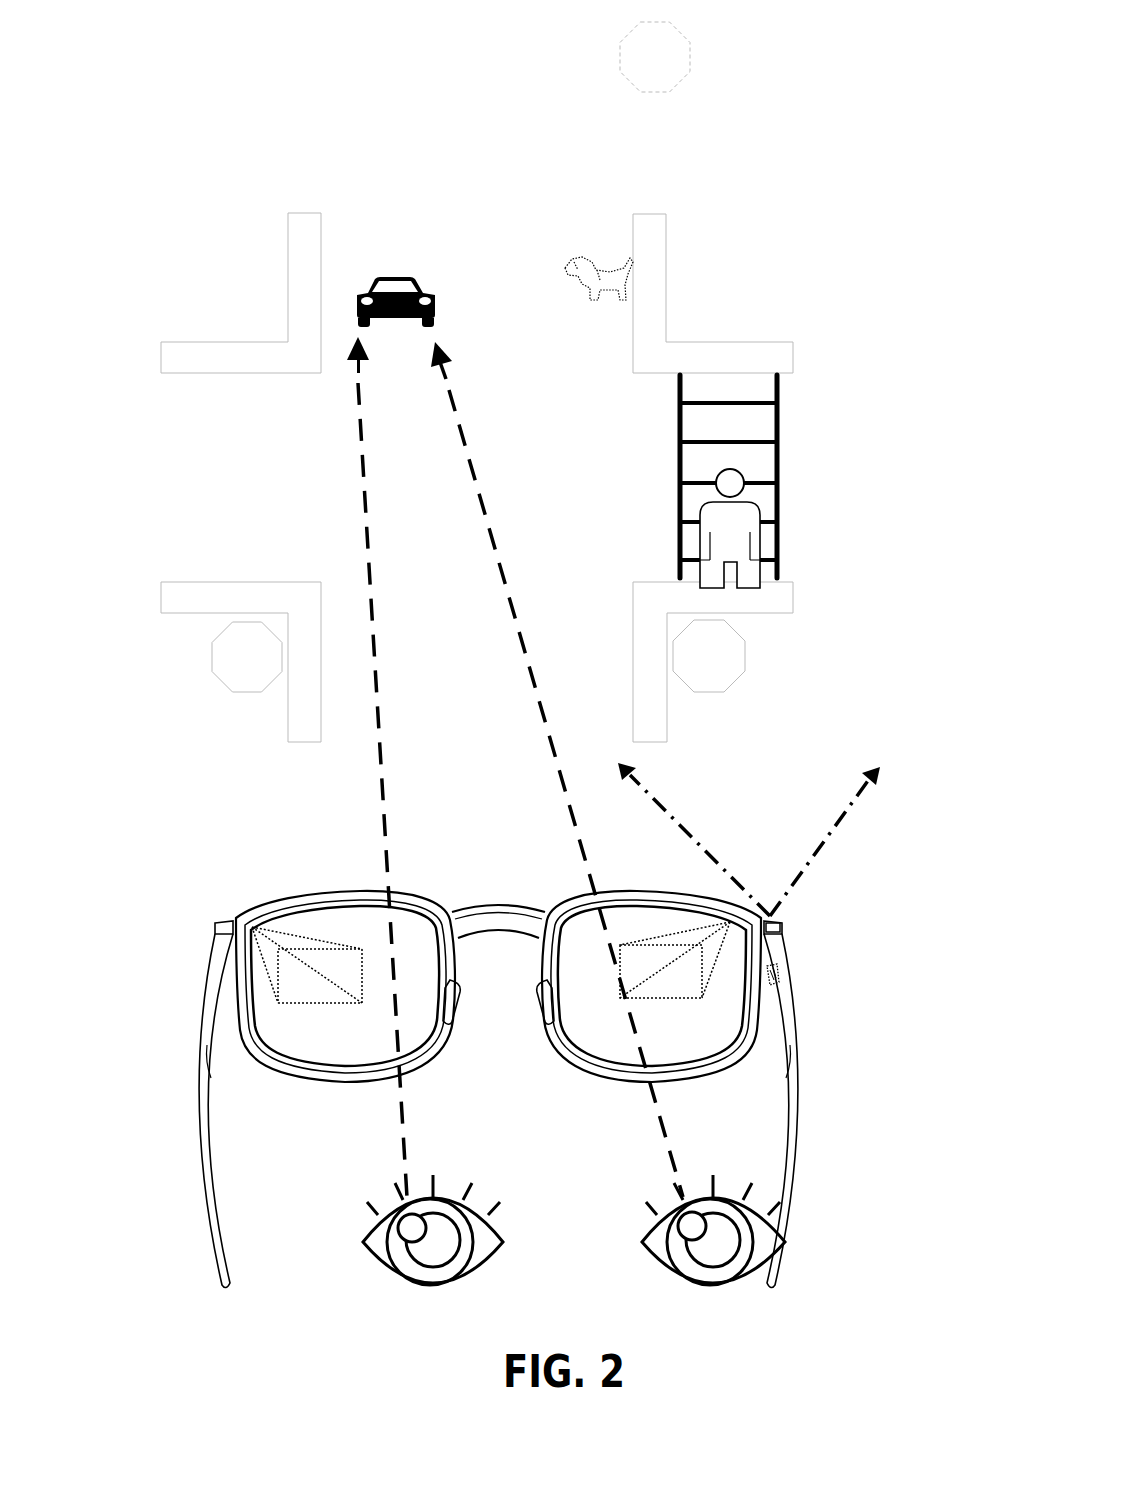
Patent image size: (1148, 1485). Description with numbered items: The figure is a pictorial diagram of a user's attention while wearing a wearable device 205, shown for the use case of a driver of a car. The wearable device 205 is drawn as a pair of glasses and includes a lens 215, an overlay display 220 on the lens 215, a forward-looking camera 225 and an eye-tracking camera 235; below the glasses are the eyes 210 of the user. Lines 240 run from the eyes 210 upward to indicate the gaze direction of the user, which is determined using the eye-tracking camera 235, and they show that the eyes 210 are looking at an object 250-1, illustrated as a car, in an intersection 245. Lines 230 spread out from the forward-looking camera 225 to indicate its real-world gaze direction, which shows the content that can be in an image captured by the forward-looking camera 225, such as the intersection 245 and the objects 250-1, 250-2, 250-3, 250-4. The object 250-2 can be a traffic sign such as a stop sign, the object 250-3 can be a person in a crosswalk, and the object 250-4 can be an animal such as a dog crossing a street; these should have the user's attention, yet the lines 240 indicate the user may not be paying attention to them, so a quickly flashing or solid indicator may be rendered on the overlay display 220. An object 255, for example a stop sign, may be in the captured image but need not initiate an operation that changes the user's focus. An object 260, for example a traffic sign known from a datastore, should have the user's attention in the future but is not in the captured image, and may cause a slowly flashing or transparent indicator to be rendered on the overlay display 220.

The wearable device 205 is at (217, 857).
The eyes 210 is at (362, 1190).
The lens 215 is at (277, 1052).
The overlay display 220 is at (348, 1005).
The forward-looking camera 225 is at (784, 917).
The lines indicating real-world gaze direction of the forward-looking camera 230 is at (688, 846).
The eye-tracking camera 235 is at (777, 966).
The lines indicating gaze direction of the eyes 240 is at (381, 793).
The intersection 245 is at (224, 293).
The object 250-1 is at (380, 266).
The object 250-2 is at (755, 658).
The object 250-3 is at (760, 502).
The object 250-4 is at (592, 254).
The object 255 is at (208, 673).
The object 260 is at (692, 26).